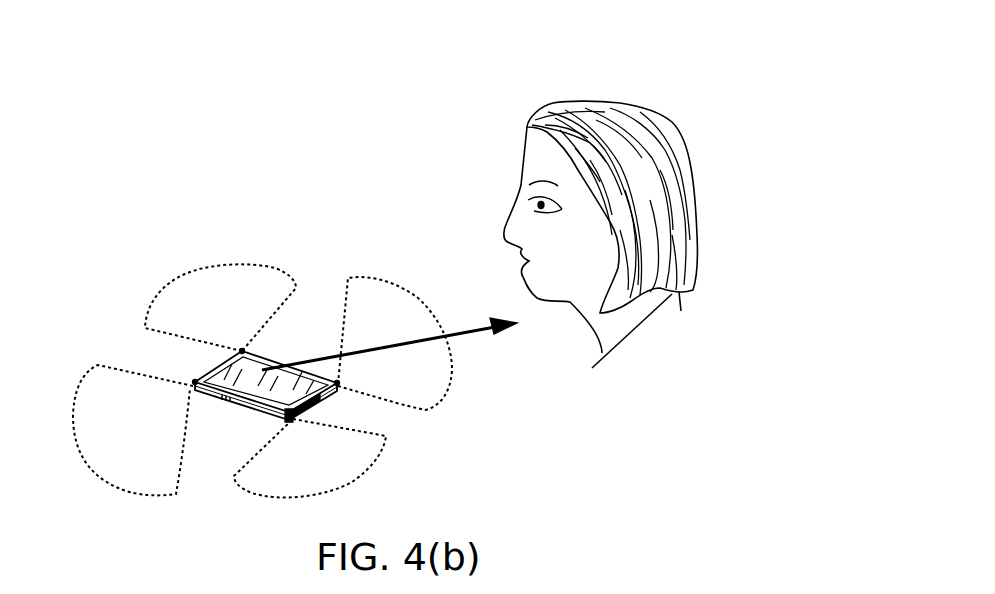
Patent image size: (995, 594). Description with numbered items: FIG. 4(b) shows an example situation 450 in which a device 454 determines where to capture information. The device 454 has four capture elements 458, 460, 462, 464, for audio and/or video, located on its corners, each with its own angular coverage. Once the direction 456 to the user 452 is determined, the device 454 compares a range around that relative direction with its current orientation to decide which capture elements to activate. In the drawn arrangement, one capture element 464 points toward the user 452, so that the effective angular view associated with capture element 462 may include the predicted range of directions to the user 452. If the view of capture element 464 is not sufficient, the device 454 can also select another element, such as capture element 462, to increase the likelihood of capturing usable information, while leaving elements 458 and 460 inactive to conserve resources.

The situation 450 is at (752, 102).
The user 452 is at (507, 151).
The device 454 is at (203, 250).
The direction 456 is at (477, 336).
The capture element 458 is at (181, 393).
The capture element 460 is at (230, 342).
The capture element 462 is at (358, 276).
The capture element 464 is at (346, 381).